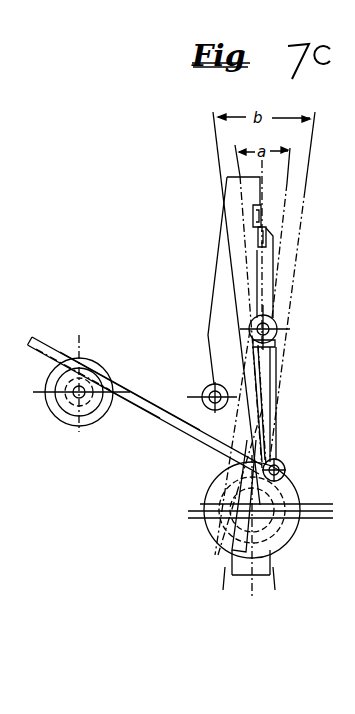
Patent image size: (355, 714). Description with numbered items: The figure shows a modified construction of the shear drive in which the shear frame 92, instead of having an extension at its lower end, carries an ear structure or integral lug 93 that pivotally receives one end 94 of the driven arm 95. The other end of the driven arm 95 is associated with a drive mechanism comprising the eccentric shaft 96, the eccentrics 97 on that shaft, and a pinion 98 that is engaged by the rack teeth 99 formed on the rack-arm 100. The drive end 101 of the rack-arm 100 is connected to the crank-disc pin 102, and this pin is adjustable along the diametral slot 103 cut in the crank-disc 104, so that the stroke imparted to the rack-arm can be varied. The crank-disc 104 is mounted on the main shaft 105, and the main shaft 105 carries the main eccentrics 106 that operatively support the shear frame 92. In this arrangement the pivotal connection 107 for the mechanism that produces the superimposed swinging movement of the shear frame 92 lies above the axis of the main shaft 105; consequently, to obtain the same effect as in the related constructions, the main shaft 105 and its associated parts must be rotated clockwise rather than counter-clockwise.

The shear frame 92 is at (207, 334).
The ear structure or integral lug 93 is at (207, 383).
The one end of the driven arm 94 is at (163, 423).
The driven arm 95 is at (130, 403).
The eccentric shaft 96 is at (75, 399).
The eccentrics 97 is at (60, 394).
The pinion 98 is at (78, 410).
The rack teeth 99 is at (65, 383).
The rack-arm 100 is at (160, 422).
The drive end of the rack-arm 101 is at (285, 465).
The crank-disc pin 102 is at (283, 482).
The diametral slot 103 is at (230, 535).
The crank-disc 104 is at (280, 540).
The main shaft 105 is at (245, 494).
The main eccentrics 106 is at (258, 577).
The pivotal connection 107 is at (207, 383).